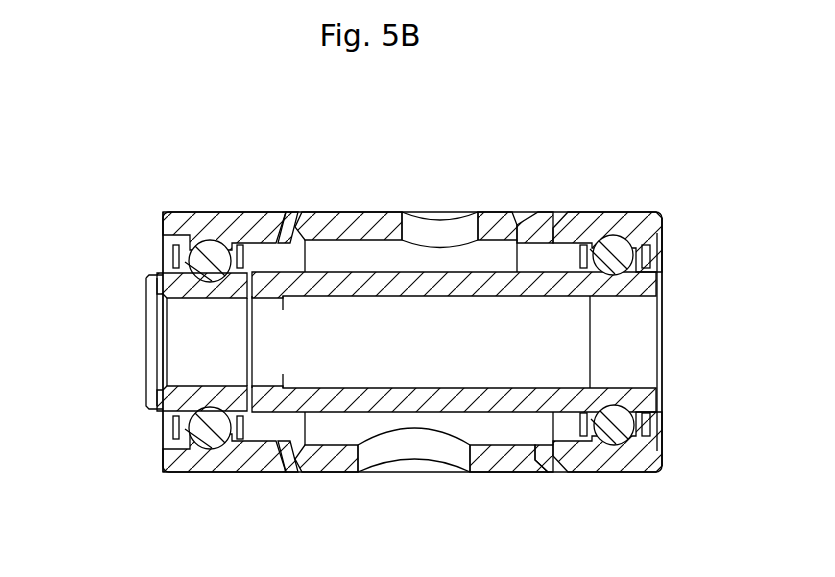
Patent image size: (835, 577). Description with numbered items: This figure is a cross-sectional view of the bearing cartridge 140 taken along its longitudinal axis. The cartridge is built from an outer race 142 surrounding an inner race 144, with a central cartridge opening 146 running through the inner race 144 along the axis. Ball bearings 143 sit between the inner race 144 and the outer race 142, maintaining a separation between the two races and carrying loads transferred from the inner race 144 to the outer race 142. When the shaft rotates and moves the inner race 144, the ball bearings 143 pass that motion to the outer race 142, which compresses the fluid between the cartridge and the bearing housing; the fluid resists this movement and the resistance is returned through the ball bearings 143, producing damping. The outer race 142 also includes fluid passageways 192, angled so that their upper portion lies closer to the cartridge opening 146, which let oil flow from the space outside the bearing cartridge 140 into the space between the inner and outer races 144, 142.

The bearing cartridge 140 is at (632, 208).
The outer race 142 is at (197, 225).
The ball bearings 143 is at (207, 265).
The inner race 144 is at (650, 402).
The cartridge opening 146 is at (443, 225).
The fluid passageways 192 is at (280, 232).